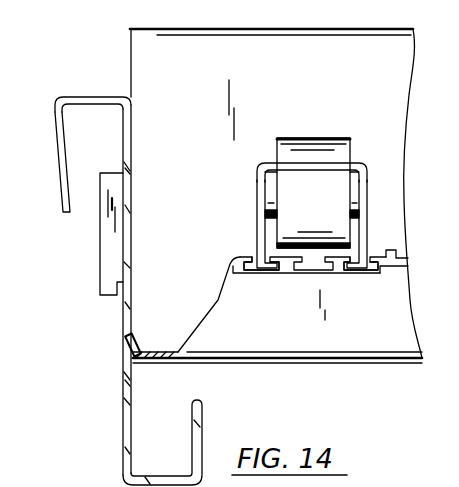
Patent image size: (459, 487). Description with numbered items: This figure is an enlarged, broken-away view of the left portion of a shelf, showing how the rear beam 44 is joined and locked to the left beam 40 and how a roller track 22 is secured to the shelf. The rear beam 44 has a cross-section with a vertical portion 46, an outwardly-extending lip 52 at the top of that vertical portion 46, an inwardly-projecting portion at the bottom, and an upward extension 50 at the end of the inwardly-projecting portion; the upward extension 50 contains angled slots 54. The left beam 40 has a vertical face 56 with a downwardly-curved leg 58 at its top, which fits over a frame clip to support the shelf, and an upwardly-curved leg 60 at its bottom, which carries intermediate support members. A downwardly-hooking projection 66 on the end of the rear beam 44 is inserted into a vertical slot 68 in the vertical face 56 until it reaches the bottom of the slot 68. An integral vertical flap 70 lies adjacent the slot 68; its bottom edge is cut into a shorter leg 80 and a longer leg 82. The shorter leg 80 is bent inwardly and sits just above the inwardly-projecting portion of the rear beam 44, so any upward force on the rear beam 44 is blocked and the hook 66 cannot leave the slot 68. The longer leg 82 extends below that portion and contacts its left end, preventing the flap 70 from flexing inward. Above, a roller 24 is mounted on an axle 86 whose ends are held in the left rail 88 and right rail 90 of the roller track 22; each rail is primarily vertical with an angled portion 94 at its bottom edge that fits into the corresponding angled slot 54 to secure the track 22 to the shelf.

The roller track 22 is at (361, 165).
The roller 24 is at (334, 112).
The left beam 40 is at (104, 67).
The rear beam 44 is at (268, 52).
The vertical portion 46 is at (397, 160).
The upward extension 50 is at (325, 318).
The outwardly-extending lip 52 is at (419, 223).
The angled slot 54 is at (316, 273).
The vertical face 56 is at (134, 129).
The downwardly-curved leg 58 is at (62, 188).
The upwardly-curved leg 60 is at (203, 425).
The downwardly-hooking projection 66 is at (100, 269).
The vertical slot 68 is at (125, 165).
The vertical flap 70 is at (129, 359).
The shorter leg 80 is at (136, 340).
The longer leg 82 is at (134, 378).
The axle 86 is at (268, 187).
The left rail 88 is at (260, 214).
The right rail 90 is at (368, 227).
The angled portion 94 is at (270, 274).